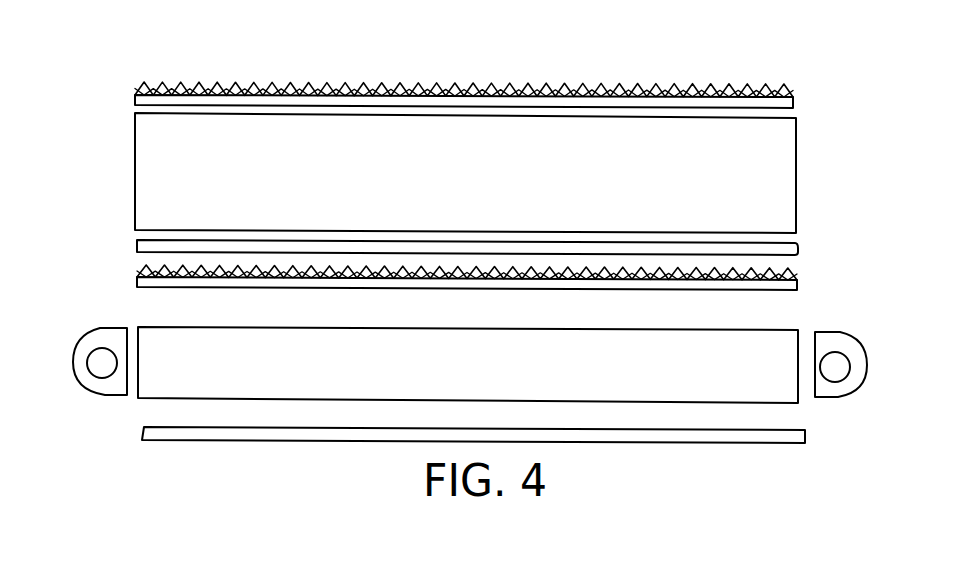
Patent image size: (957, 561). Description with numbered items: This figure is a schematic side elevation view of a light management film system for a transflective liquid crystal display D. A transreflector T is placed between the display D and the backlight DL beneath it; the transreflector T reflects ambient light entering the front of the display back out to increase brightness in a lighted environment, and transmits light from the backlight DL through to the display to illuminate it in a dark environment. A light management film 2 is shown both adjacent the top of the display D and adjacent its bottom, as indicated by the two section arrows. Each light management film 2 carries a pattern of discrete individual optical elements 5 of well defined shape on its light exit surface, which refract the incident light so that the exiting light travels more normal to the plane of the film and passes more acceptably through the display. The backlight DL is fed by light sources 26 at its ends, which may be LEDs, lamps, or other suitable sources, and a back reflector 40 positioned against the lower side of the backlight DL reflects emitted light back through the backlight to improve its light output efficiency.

The light management film 2 is at (113, 97).
The individual optical elements 5 is at (337, 83).
The transflective liquid crystal display D is at (782, 148).
The transreflector T is at (800, 248).
The backlight DL is at (152, 403).
The light source 26 is at (98, 381).
The back reflector 40 is at (616, 437).